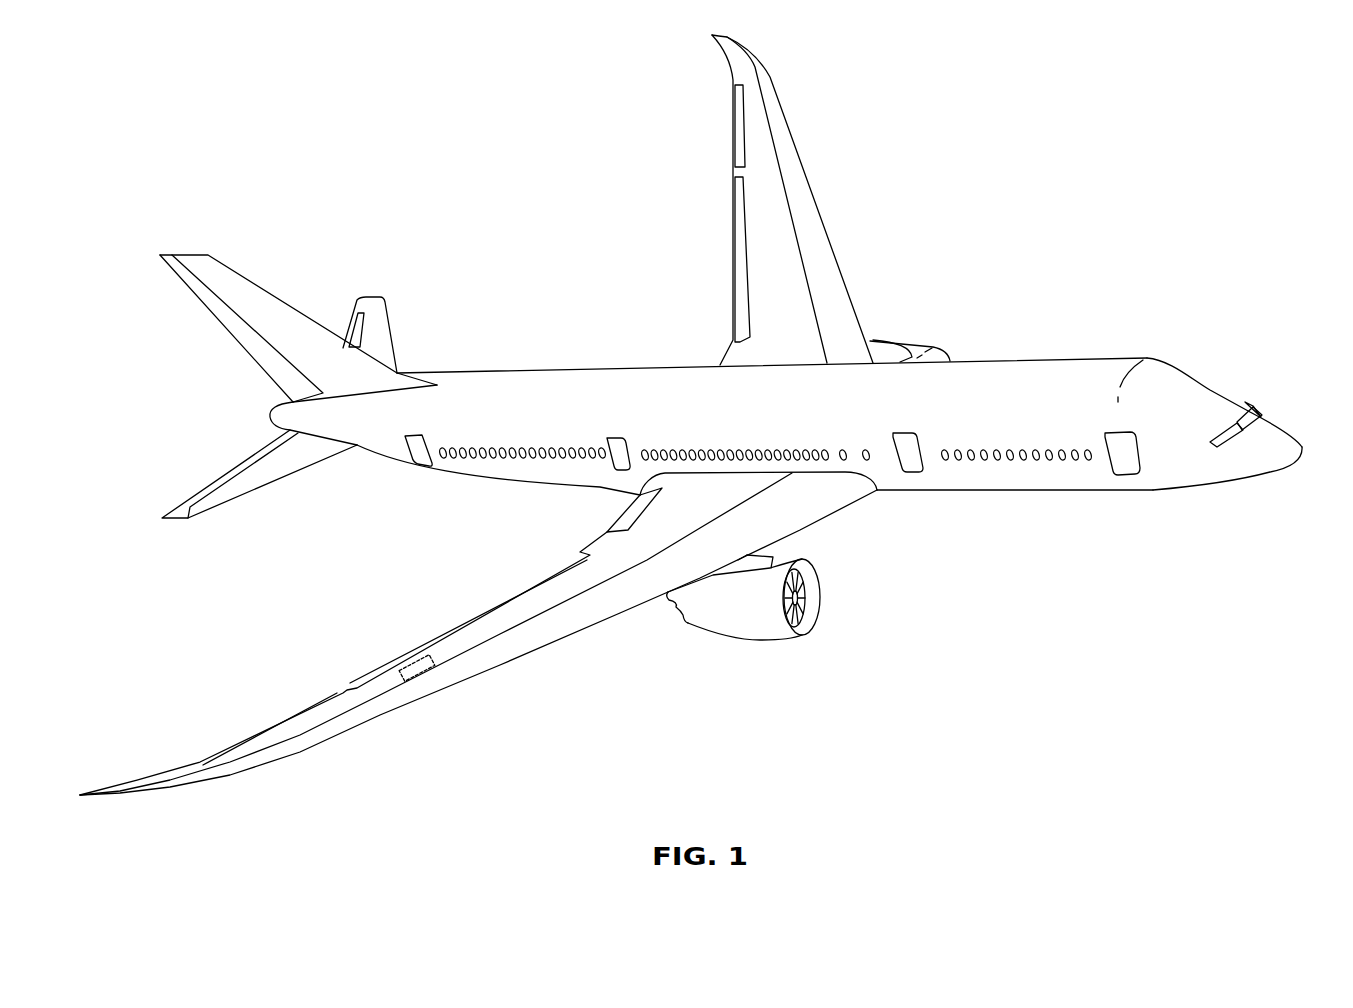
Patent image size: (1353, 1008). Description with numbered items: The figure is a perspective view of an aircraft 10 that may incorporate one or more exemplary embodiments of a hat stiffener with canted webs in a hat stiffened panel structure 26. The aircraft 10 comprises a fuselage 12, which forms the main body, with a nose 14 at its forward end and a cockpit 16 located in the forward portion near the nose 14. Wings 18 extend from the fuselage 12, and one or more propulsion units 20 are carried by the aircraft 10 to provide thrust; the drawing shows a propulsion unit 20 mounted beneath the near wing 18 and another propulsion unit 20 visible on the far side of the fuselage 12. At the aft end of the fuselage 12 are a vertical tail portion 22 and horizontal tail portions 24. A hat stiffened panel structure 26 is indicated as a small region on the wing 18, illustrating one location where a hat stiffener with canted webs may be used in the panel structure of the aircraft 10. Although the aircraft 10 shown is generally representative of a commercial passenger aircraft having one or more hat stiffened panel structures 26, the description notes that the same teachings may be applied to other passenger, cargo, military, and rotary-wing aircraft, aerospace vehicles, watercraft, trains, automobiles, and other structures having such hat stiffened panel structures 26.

The aircraft 10 is at (1045, 155).
The fuselage 12 is at (1013, 370).
The nose 14 is at (1275, 455).
The cockpit 16 is at (1257, 413).
The wings 18 is at (777, 118).
The propulsion units 20 is at (805, 632).
The vertical tail portion 22 is at (253, 308).
The horizontal tail portions 24 is at (383, 333).
The hat stiffened panel structure 26 is at (420, 657).